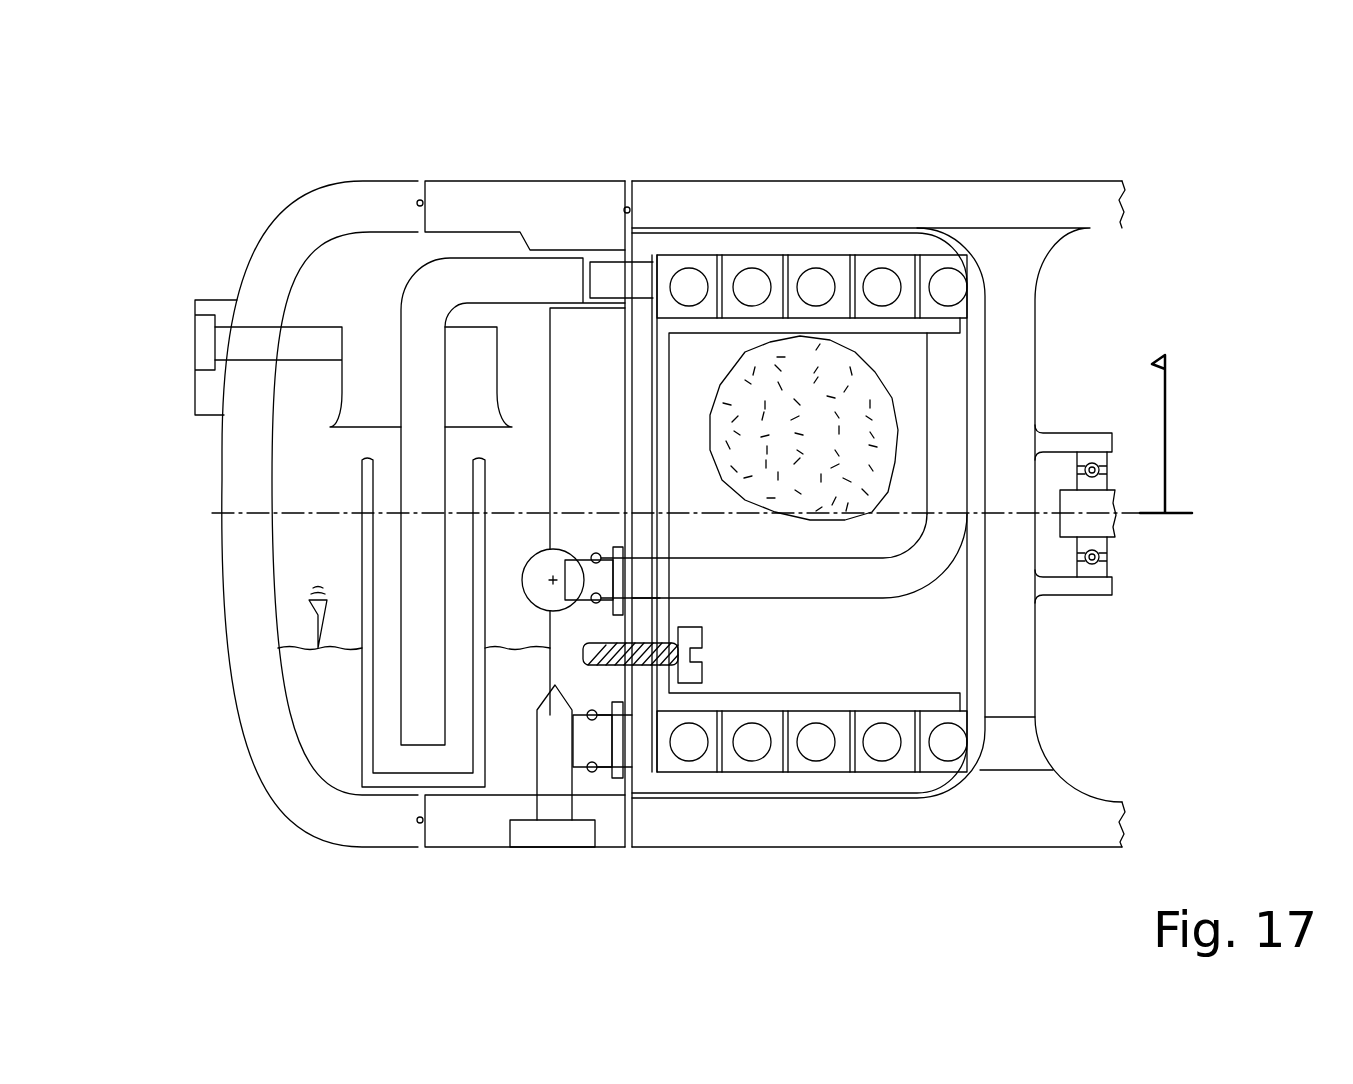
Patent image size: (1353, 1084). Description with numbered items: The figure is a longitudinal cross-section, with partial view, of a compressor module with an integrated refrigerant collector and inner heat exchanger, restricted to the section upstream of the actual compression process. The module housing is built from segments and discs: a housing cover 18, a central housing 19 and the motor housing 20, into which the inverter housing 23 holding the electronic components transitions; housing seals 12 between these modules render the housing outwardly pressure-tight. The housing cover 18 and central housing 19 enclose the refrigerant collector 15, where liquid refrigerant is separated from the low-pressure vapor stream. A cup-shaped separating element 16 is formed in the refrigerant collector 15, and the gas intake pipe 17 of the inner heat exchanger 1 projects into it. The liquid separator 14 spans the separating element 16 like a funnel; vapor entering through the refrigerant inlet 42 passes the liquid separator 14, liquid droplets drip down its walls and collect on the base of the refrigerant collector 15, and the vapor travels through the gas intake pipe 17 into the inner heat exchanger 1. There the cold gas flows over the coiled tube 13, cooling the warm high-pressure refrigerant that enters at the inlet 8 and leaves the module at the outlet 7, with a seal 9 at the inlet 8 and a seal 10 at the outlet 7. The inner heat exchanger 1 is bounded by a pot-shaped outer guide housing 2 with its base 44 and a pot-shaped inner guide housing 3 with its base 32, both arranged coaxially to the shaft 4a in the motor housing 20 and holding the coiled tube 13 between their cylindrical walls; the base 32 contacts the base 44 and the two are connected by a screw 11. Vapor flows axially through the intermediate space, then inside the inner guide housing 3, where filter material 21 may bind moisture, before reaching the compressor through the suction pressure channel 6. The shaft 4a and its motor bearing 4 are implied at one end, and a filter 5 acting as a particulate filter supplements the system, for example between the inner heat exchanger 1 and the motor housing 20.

The inner heat exchanger 1 is at (790, 762).
The outer guide housing 2 is at (917, 240).
The inner guide housing 3 is at (905, 327).
The motor bearing 4 is at (1092, 462).
The shaft 4a is at (1077, 522).
The filter 5 is at (880, 655).
The suction pressure channel 6 is at (1027, 757).
The outlet 7 is at (552, 835).
The inlet 8 is at (538, 592).
The seal 9 is at (598, 552).
The seal 10 is at (591, 708).
The screw 11 is at (698, 655).
The housing seal 12 is at (624, 209).
The coiled tube 13 is at (817, 280).
The liquid separator 14 is at (367, 403).
The refrigerant collector 15 is at (303, 677).
The separating element 16 is at (363, 483).
The gas intake pipe 17 is at (420, 283).
The housing cover 18 is at (285, 245).
The central housing 19 is at (447, 832).
The motor housing 20 is at (830, 830).
The filter material 21 is at (752, 380).
The inverter housing 23 is at (398, 162).
The base 32 is at (663, 438).
The refrigerant inlet 42 is at (200, 345).
The base 44 is at (625, 385).